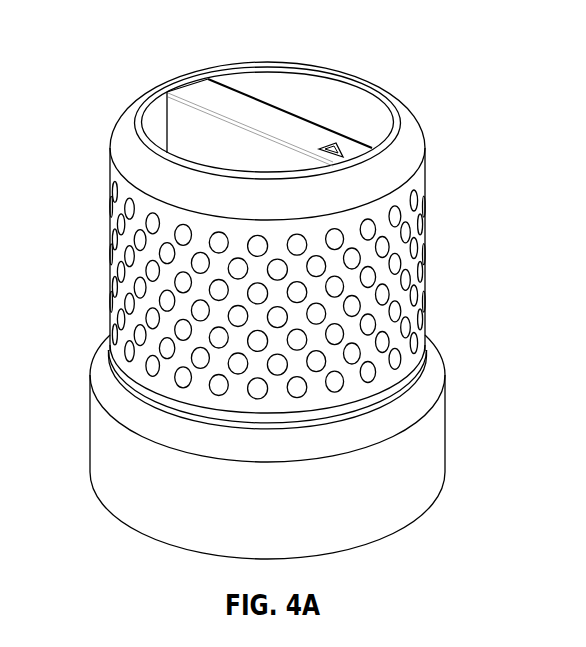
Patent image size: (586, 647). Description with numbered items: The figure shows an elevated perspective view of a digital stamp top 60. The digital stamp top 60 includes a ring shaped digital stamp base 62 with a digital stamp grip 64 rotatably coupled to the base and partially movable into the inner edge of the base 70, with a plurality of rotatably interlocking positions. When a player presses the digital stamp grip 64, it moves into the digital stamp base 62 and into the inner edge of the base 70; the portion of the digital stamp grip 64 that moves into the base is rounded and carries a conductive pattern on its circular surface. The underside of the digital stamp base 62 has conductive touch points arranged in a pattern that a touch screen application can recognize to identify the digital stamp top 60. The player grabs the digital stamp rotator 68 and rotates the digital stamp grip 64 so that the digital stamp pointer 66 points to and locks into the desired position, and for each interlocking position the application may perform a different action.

The digital stamp top 60 is at (104, 76).
The digital stamp base 62 is at (446, 435).
The digital stamp grip 64 is at (426, 231).
The digital stamp pointer 66 is at (334, 147).
The digital stamp rotator 68 is at (251, 112).
The inner edge of the base 70 is at (424, 362).